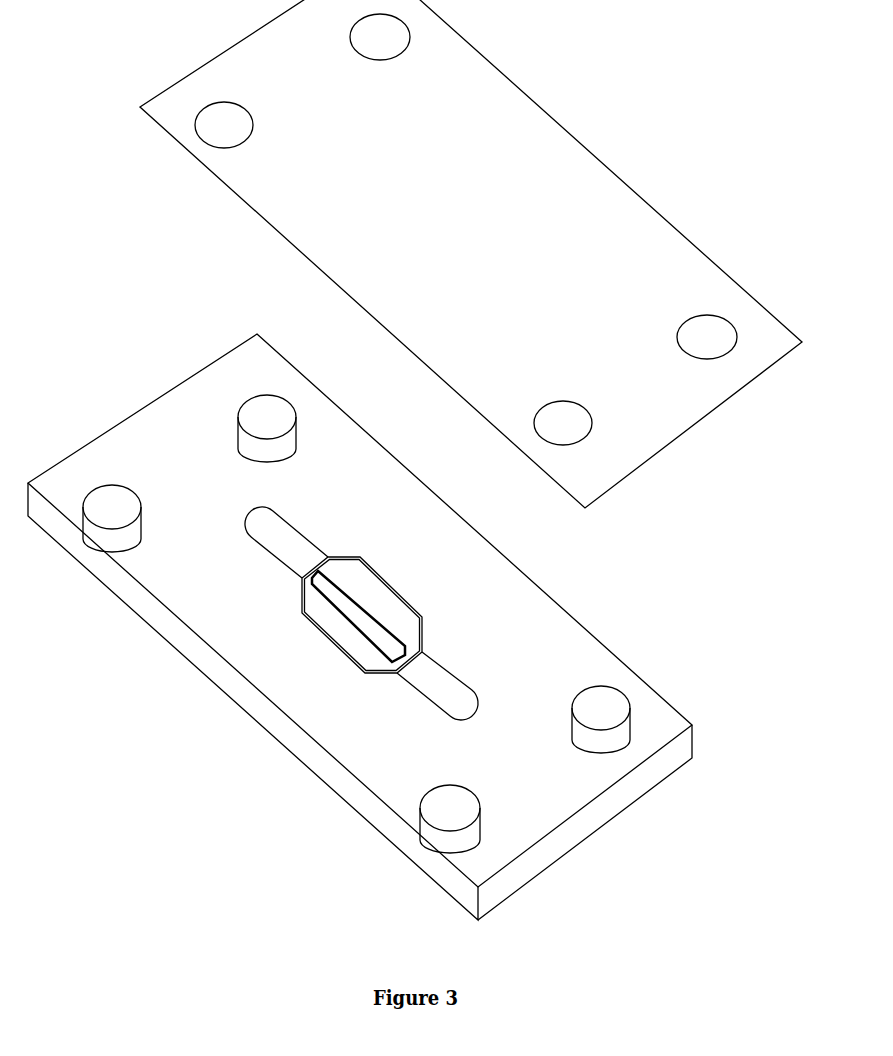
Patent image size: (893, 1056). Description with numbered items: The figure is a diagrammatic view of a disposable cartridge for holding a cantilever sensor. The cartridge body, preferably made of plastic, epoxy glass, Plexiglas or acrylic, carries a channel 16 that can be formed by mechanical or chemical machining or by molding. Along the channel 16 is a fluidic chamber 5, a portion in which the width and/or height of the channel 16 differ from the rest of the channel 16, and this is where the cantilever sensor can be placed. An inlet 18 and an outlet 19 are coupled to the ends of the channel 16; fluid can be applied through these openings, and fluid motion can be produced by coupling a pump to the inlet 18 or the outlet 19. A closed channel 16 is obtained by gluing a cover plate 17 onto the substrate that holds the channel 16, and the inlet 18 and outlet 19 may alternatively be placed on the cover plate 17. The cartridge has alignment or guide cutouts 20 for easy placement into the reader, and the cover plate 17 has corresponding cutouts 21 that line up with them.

The cover plate 17 is at (558, 165).
The corresponding cutouts 21 is at (198, 142).
The alignment or guide cutouts 20 is at (108, 538).
The inlet 18 is at (263, 530).
The outlet 19 is at (425, 680).
The channel 16 is at (387, 566).
The fluidic chamber 5 is at (398, 585).